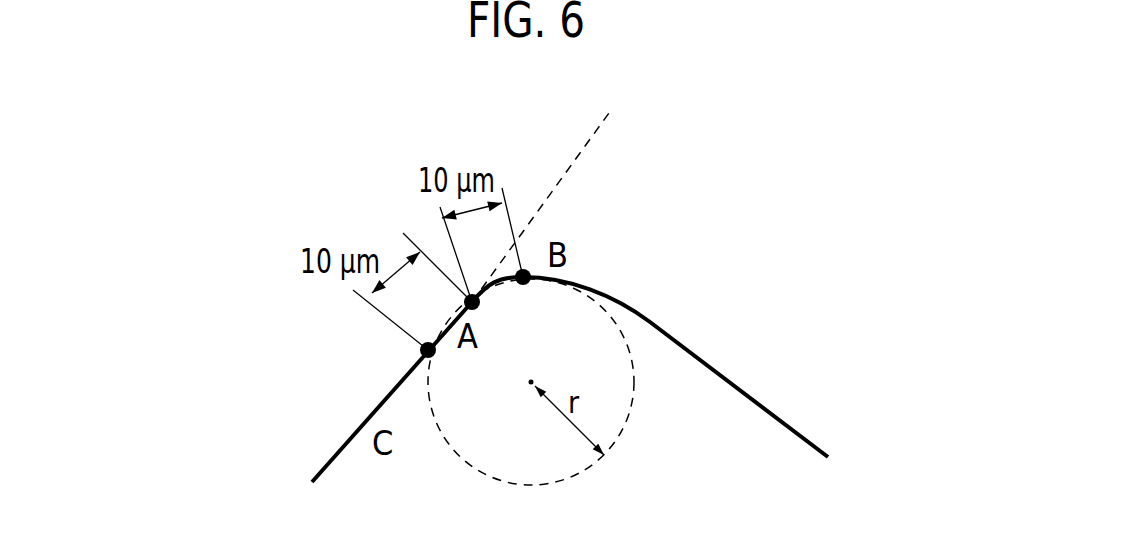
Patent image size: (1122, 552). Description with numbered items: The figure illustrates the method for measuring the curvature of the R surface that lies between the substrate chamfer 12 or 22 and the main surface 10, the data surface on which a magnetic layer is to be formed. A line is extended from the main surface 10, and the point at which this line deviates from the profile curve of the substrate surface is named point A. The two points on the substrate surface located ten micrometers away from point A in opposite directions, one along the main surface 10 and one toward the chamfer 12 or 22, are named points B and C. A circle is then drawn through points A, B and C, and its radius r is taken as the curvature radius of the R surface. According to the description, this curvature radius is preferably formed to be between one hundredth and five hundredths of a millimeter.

The main surface 10 is at (385, 391).
The chamfer 12 is at (741, 353).
The chamfer 22 is at (698, 350).